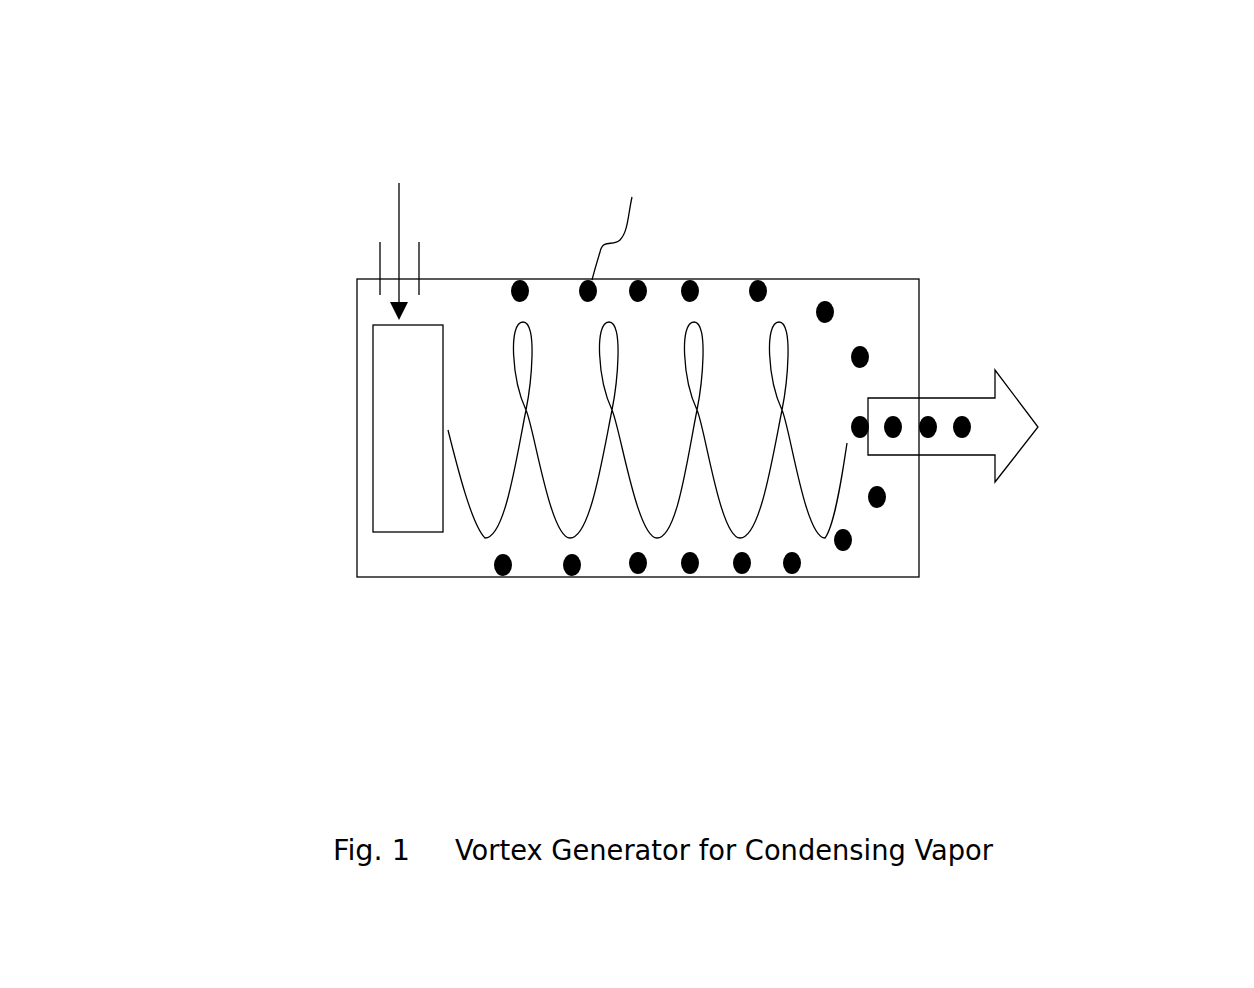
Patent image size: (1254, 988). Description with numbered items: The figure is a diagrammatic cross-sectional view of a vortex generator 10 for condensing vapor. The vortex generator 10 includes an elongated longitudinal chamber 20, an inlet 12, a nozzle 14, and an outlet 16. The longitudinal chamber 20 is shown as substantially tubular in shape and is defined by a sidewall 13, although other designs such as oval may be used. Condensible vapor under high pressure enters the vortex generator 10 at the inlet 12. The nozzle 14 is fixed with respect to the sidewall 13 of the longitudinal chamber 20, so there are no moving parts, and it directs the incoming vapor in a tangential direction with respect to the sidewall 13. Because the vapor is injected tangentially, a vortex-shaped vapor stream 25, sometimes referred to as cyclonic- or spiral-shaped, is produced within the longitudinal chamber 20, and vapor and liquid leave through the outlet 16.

The vortex generator 10 is at (551, 145).
The inlet 12 is at (386, 242).
The sidewall 13 is at (872, 278).
The nozzle 14 is at (387, 507).
The outlet 16 is at (940, 457).
The longitudinal chamber 20 is at (655, 463).
The vortex-shaped vapor stream 25 is at (555, 523).